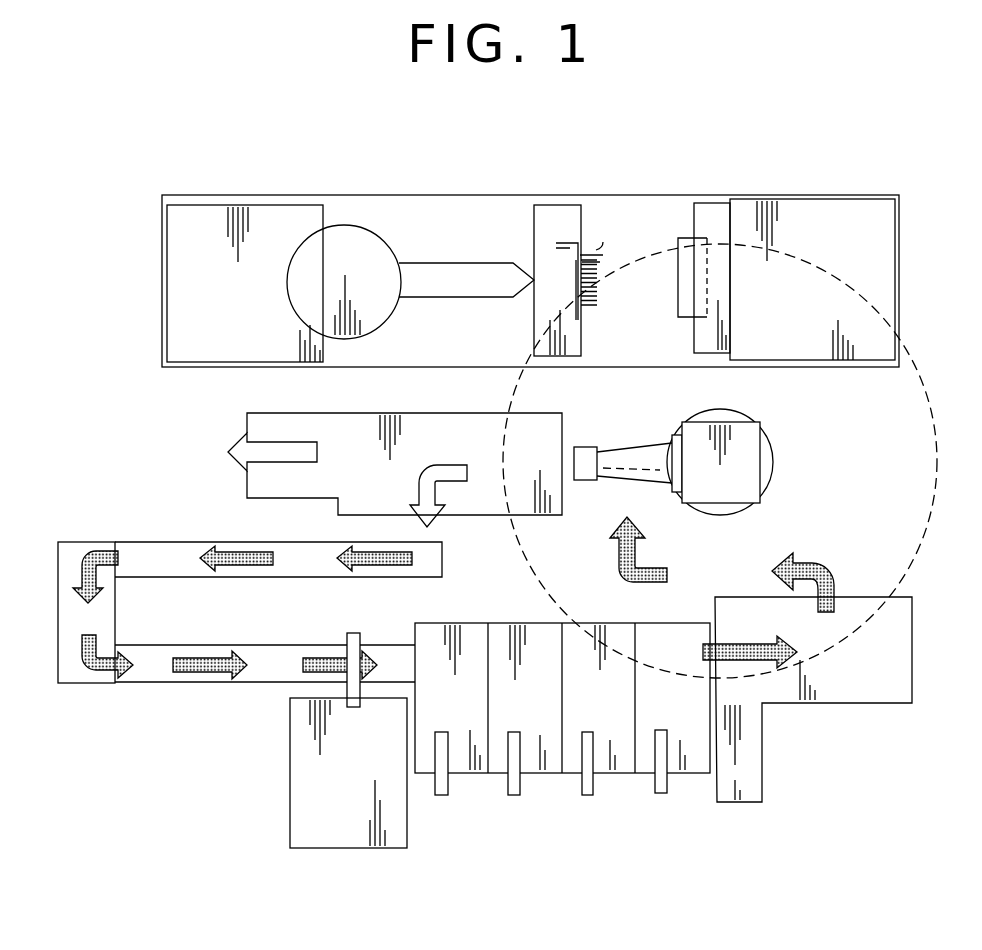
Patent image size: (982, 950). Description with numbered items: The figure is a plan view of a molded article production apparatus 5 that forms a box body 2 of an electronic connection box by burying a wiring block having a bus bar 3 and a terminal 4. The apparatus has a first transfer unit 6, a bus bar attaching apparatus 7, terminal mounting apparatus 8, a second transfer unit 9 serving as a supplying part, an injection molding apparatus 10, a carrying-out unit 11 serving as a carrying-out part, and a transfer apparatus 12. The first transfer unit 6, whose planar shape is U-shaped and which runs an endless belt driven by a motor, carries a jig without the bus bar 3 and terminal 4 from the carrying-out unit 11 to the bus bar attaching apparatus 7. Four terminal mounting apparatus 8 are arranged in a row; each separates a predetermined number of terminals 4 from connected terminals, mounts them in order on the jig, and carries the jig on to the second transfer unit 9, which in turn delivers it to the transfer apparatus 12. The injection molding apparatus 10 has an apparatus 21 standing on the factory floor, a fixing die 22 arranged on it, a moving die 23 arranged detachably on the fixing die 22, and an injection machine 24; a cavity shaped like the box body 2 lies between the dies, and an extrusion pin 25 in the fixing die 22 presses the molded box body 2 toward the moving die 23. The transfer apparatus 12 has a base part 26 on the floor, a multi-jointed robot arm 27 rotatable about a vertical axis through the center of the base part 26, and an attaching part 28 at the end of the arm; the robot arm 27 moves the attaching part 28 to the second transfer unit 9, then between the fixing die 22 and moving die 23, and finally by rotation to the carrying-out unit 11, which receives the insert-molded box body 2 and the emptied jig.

The box body 2 is at (678, 319).
The bus bar 3 is at (590, 272).
The terminal 4 is at (598, 258).
The molded article production apparatus 5 is at (608, 185).
The first transfer unit 6 is at (161, 542).
The bus bar attaching apparatus 7 is at (345, 848).
The terminal mounting apparatus 8 is at (680, 776).
The second transfer unit 9 is at (840, 704).
The injection molding apparatus 10 is at (903, 272).
The carrying-out unit 11 is at (566, 427).
The transfer apparatus 12 is at (776, 477).
The apparatus 21 is at (662, 210).
The fixing die 22 is at (555, 205).
The moving die 23 is at (712, 220).
The injection machine 24 is at (380, 233).
The extrusion pin 25 is at (557, 243).
The base part 26 is at (770, 452).
The robot arm 27 is at (718, 413).
The attaching part 28 is at (588, 447).